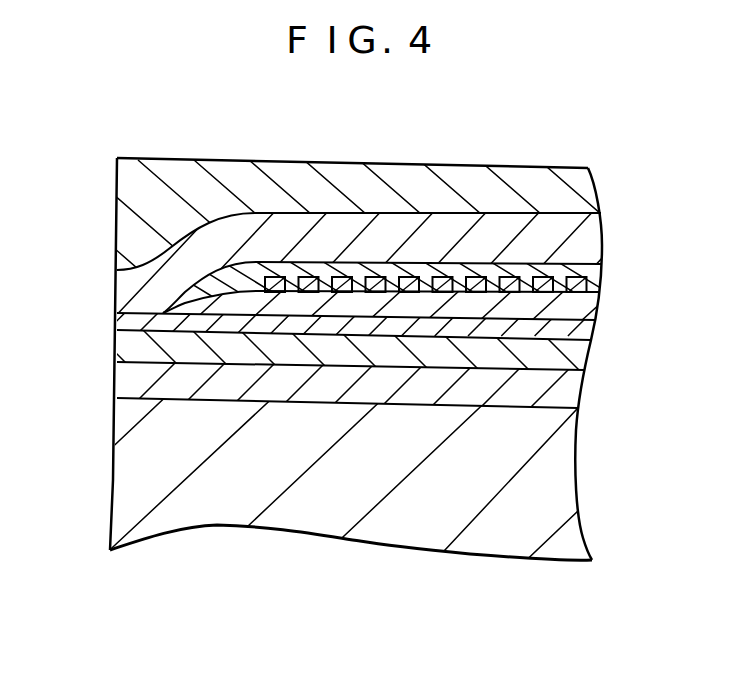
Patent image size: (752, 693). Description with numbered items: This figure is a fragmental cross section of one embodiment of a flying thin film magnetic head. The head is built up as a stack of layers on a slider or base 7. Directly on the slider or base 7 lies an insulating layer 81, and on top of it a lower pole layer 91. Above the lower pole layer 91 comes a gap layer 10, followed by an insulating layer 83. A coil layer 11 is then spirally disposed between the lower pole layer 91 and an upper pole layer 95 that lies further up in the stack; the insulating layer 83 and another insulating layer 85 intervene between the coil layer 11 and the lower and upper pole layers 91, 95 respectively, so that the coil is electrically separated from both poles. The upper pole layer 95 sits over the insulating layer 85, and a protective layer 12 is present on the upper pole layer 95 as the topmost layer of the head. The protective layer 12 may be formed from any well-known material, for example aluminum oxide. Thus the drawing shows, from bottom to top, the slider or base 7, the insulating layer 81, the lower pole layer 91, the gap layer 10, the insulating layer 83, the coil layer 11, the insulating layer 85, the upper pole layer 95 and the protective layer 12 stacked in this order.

The slider or base 7 is at (442, 532).
The gap layer 10 is at (132, 312).
The coil layer 11 is at (276, 277).
The protective layer 12 is at (543, 188).
The insulating layer 81 is at (565, 398).
The insulating layer 83 is at (578, 313).
The insulating layer 85 is at (592, 273).
The lower pole layer 91 is at (573, 362).
The upper pole layer 95 is at (592, 237).